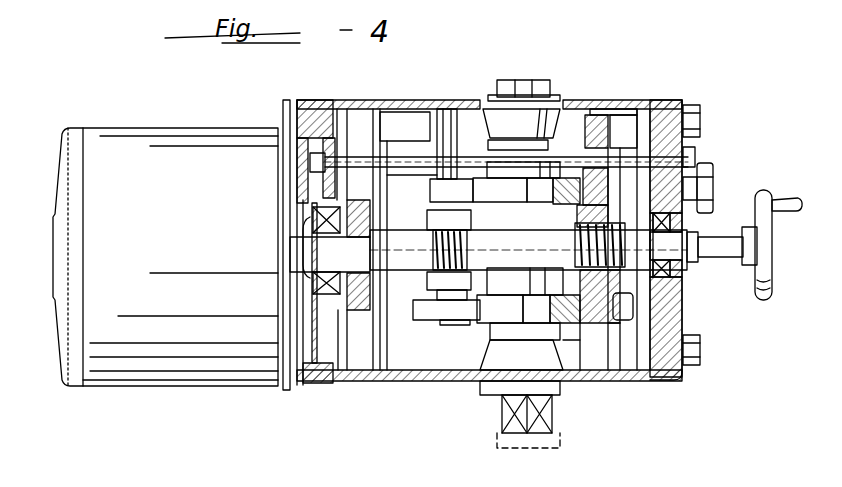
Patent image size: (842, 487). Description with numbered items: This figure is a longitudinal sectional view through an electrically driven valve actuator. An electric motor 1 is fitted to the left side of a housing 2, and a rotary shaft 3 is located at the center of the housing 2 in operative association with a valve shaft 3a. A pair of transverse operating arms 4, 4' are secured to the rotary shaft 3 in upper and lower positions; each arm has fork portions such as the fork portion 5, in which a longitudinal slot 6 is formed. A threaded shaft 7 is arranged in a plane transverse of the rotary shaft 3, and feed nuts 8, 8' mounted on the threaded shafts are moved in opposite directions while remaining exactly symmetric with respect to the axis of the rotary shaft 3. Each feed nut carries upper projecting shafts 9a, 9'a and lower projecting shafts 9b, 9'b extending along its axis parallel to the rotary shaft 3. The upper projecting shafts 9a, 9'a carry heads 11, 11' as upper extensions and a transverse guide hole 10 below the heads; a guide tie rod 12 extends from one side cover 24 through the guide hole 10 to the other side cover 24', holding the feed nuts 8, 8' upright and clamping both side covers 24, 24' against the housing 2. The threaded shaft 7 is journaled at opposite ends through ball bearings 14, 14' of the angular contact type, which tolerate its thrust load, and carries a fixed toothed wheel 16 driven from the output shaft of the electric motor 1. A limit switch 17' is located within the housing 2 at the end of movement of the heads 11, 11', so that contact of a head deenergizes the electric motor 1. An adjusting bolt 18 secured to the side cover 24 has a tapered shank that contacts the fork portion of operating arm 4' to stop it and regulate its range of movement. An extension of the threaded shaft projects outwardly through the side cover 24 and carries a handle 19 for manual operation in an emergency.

The electric motor 1 is at (190, 248).
The housing 2 is at (417, 110).
The rotary shaft 3 is at (513, 80).
The valve shaft 3a is at (560, 446).
The operating arm 4 is at (523, 325).
The operating arm 4' is at (526, 202).
The fork portion 5 is at (430, 315).
The longitudinal slot 6 is at (608, 305).
The threaded shaft 7 is at (430, 255).
The feed nut 8 is at (644, 268).
The feed nut 8' is at (433, 219).
The upper projecting shaft 9a is at (600, 172).
The upper projecting shaft 9'a is at (515, 129).
The lower projecting shaft 9b is at (598, 345).
The lower projecting shaft 9'b is at (523, 284).
The transverse guide hole 10 is at (556, 160).
The head 11 is at (613, 212).
The head 11' is at (437, 132).
The guide tie rod 12 is at (362, 160).
The ball bearing 14 is at (556, 261).
The ball bearing 14' is at (306, 254).
The toothed wheel 16 is at (358, 305).
The limit switch 17' is at (489, 103).
The adjusting bolt 18 is at (703, 188).
The handle 19 is at (772, 235).
The side cover 24 is at (507, 222).
The side cover 24' is at (306, 225).